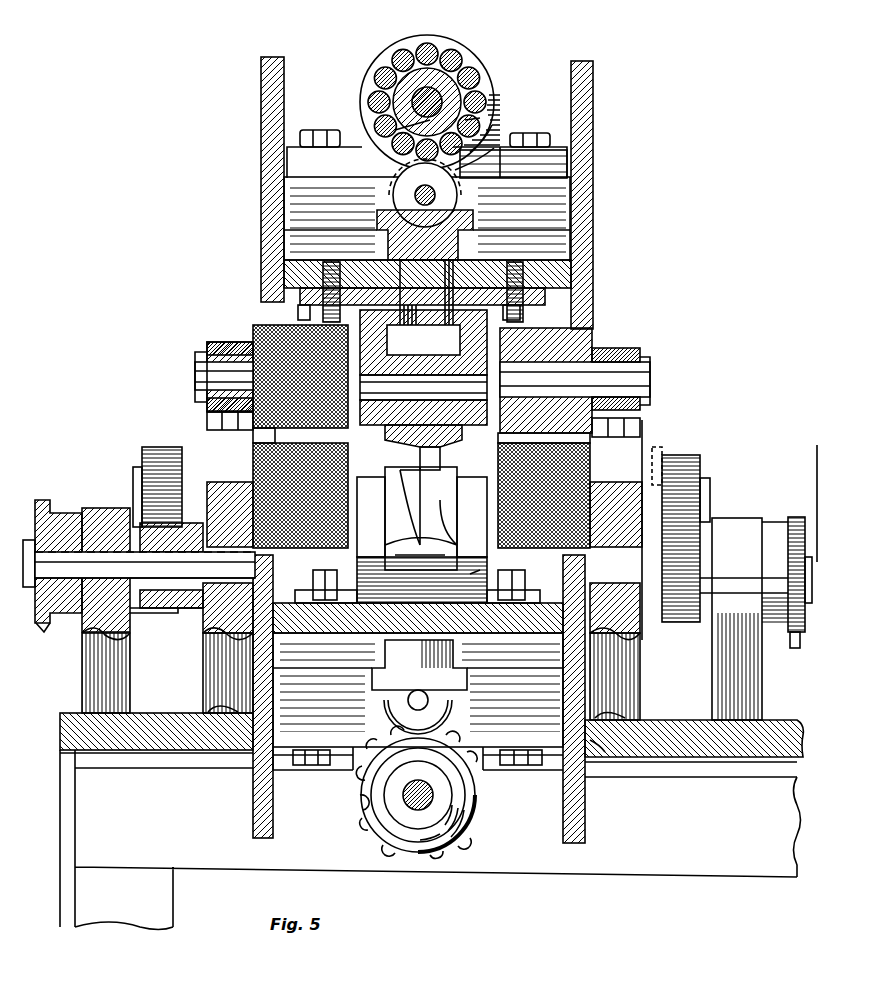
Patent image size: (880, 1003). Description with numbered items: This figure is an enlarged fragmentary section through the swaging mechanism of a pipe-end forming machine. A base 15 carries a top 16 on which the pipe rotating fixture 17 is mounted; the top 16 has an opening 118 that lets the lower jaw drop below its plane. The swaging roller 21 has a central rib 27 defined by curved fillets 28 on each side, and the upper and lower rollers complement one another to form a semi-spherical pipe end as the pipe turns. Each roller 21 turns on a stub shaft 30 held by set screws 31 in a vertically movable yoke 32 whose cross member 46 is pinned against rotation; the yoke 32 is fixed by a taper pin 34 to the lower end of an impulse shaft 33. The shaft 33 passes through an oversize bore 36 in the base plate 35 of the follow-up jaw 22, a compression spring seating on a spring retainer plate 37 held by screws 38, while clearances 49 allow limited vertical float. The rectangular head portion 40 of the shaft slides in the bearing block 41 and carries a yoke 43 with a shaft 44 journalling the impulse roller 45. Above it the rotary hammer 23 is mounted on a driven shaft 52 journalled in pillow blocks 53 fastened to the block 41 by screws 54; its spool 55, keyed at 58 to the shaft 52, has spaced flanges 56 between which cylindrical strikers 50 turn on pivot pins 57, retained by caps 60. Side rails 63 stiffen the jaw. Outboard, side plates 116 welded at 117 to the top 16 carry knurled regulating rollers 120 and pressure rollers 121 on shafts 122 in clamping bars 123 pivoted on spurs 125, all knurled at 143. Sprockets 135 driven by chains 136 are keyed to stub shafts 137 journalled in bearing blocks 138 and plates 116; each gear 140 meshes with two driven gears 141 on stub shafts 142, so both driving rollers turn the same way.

The base 15 is at (53, 850).
The top 16 is at (66, 714).
The pipe rotating fixture 17 is at (649, 670).
The swaging roller 21 is at (396, 515).
The follow-up jaw 22 is at (605, 121).
The rotary hammer 23 is at (470, 46).
The rib 27 is at (445, 450).
The curved fillet 28 is at (400, 470).
The stub shaft 30 is at (423, 387).
The set screw 31 is at (390, 428).
The yoke 32 is at (360, 338).
The impulse shaft 33 is at (425, 295).
The taper pin 34 is at (423, 342).
The base plate 35 is at (305, 262).
The bore 36 is at (486, 275).
The spring retainer plate 37 is at (547, 303).
The screw 38 is at (522, 315).
The rectangular head portion 40 is at (462, 215).
The bearing block 41 is at (570, 210).
The yoke 43 is at (393, 194).
The shaft 44 is at (436, 193).
The impulse roller 45 is at (405, 185).
The cross member 46 is at (480, 572).
The clearance 49 is at (470, 574).
The striker 50 is at (448, 52).
The driven shaft 52 is at (460, 95).
The pillow block 53 is at (478, 55).
The screw 54 is at (318, 133).
The spool 55 is at (481, 118).
The flange 56 is at (380, 90).
The pivot pin 57 is at (485, 78).
The key 58 is at (395, 130).
The cap 60 is at (462, 828).
The side rail 63 is at (270, 108).
The side plate 116 is at (207, 660).
The weld 117 is at (210, 705).
The opening 118 is at (603, 750).
The regulating roller 120 is at (258, 446).
The pressure roller 121 is at (250, 336).
The shaft 122 is at (200, 375).
The clamping bar 123 is at (205, 395).
The spur 125 is at (205, 425).
The driven sprocket 135 is at (52, 500).
The sprocket chain 136 is at (790, 525).
The stub shaft 137 is at (65, 572).
The bearing block 138 is at (82, 663).
The gear 140 is at (165, 610).
The driven gear 141 is at (148, 447).
The stub shaft 142 is at (133, 485).
The knurl 143 is at (258, 330).